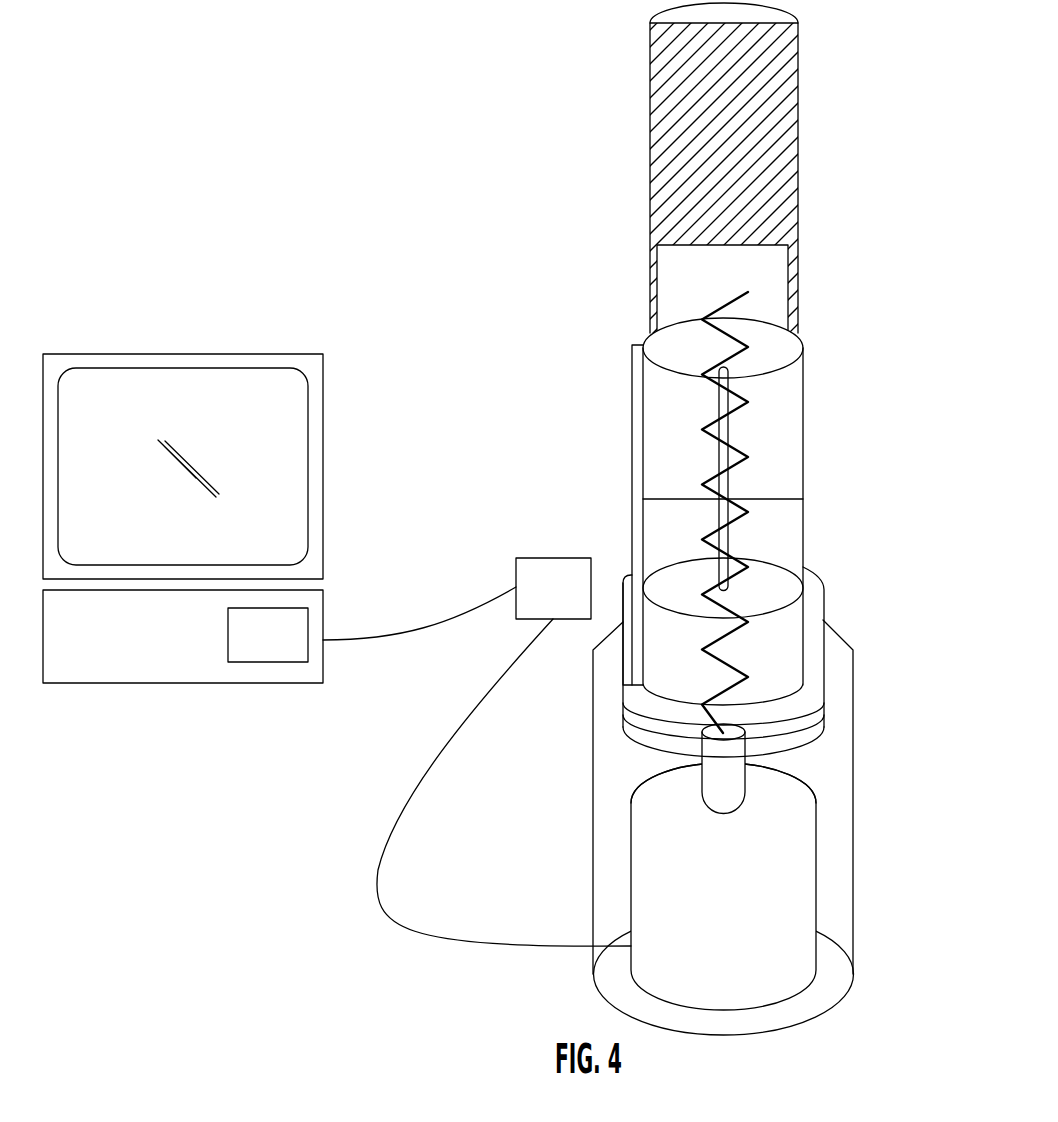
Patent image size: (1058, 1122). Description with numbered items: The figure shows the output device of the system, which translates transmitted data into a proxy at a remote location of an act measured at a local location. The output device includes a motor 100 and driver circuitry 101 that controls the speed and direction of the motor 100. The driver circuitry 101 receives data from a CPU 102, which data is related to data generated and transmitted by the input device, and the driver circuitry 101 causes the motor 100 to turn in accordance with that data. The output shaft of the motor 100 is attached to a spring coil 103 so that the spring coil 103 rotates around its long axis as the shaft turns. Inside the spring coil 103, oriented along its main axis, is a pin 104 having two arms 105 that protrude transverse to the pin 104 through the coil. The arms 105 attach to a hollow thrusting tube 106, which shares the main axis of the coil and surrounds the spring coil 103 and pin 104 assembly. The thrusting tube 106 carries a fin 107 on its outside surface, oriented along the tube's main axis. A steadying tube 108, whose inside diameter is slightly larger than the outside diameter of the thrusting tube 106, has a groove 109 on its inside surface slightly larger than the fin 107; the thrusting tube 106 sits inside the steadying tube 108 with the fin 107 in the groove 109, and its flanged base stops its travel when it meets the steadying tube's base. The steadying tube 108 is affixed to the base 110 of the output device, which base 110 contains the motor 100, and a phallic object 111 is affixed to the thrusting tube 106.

The motor 100 is at (783, 873).
The driver circuitry 101 is at (530, 558).
The CPU 102 is at (205, 683).
The spring coil 103 is at (748, 680).
The pin 104 is at (728, 548).
The arms 105 is at (770, 497).
The thrusting tube 106 is at (803, 390).
The fin 107 is at (632, 372).
The steadying tube 108 is at (823, 608).
The groove 109 is at (632, 643).
The base 110 is at (854, 922).
The phallic object 111 is at (798, 104).